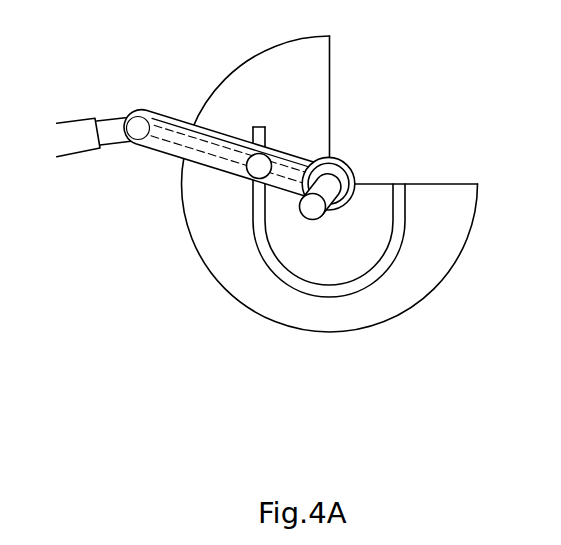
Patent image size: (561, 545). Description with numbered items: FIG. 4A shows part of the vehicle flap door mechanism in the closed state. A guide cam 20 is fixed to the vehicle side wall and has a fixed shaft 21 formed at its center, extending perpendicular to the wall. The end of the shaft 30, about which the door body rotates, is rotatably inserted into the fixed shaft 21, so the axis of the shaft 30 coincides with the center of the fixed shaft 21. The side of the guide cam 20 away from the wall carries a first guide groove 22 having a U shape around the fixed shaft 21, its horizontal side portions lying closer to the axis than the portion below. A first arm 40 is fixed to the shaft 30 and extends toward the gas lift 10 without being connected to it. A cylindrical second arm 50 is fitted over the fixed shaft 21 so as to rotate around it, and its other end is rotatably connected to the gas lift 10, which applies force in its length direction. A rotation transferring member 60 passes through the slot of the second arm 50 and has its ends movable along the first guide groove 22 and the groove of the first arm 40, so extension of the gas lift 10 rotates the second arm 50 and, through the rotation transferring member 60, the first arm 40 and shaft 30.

The gas lift 10 is at (77, 125).
The guide cam 20 is at (322, 90).
The fixed shaft 21 is at (353, 167).
The first guide groove 22 is at (383, 267).
The shaft 30 is at (315, 214).
The first arm 40 is at (153, 148).
The second arm 50 is at (178, 120).
The rotation transferring member 60 is at (254, 174).